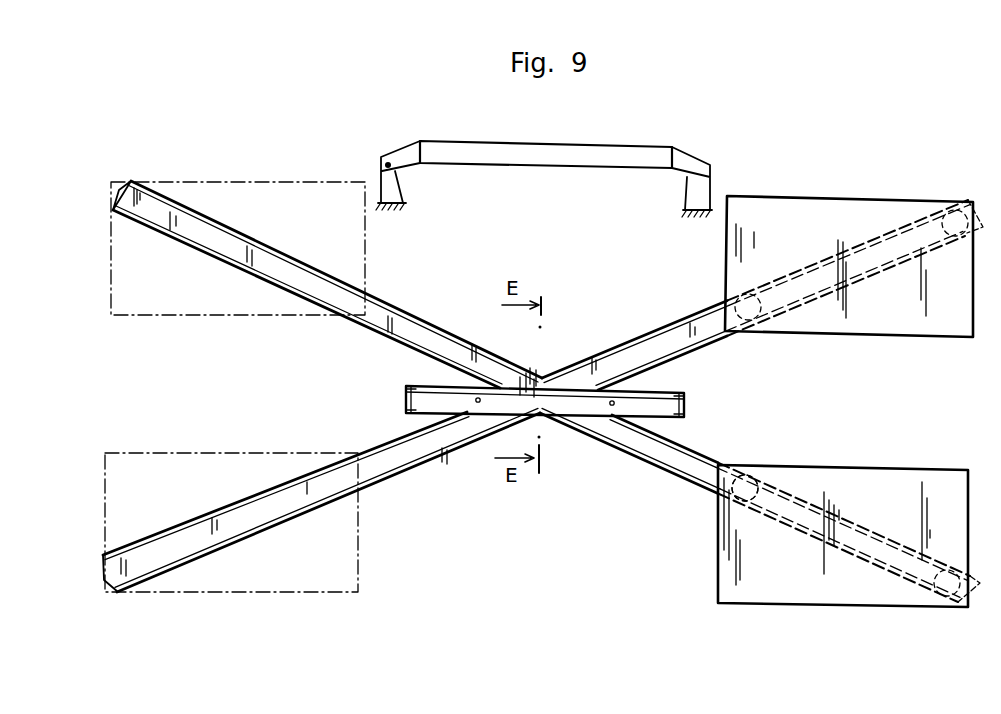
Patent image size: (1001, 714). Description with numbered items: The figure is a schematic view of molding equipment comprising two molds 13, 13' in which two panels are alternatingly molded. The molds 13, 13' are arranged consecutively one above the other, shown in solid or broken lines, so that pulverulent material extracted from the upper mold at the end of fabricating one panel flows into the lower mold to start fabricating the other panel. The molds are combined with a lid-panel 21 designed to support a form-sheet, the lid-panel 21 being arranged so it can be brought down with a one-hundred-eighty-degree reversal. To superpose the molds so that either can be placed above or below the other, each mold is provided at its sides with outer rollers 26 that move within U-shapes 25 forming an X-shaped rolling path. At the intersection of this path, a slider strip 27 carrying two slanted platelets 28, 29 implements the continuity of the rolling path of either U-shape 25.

The lid-panel 21 is at (638, 162).
The mold 13 is at (849, 286).
The mold 13' is at (843, 517).
The U-shapes 25 is at (680, 470).
The outer rollers 26 is at (767, 482).
The slider strip 27 is at (660, 400).
The slanted platelet 28 is at (405, 402).
The slanted platelet 29 is at (568, 406).